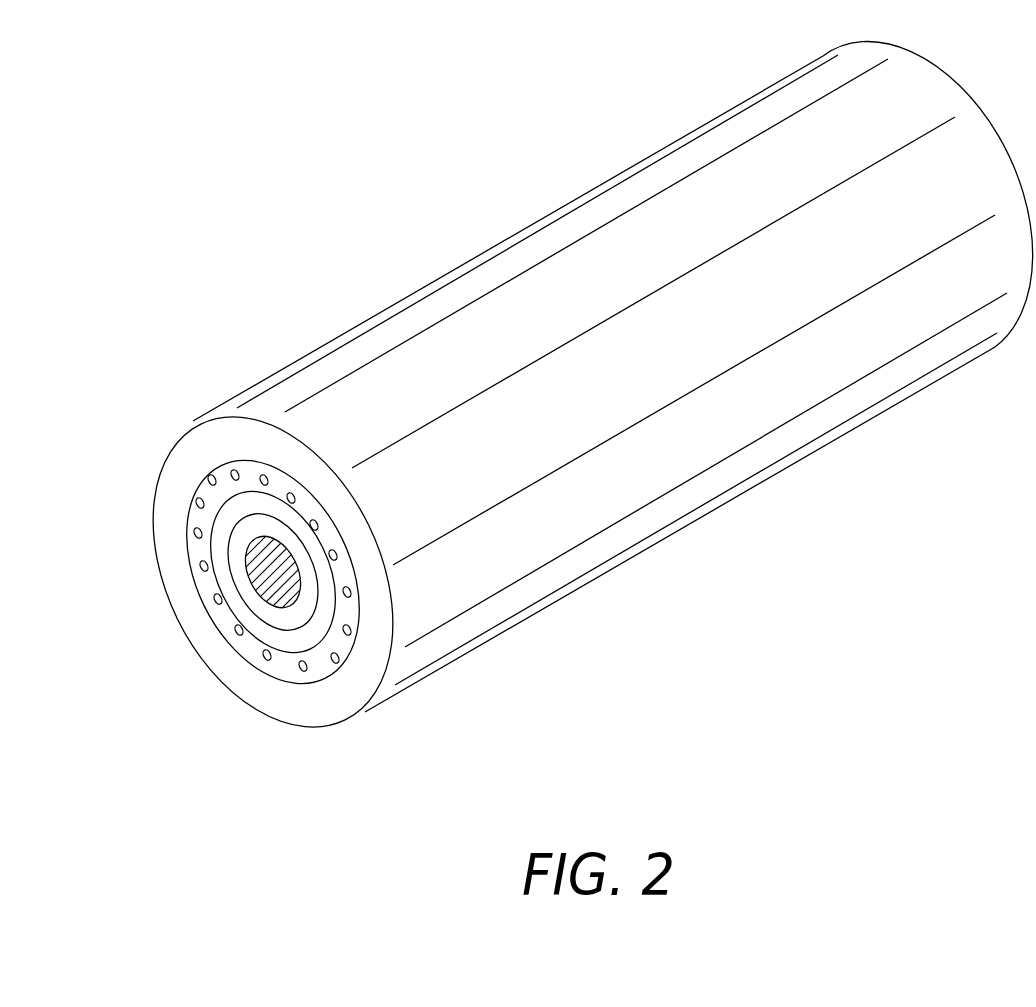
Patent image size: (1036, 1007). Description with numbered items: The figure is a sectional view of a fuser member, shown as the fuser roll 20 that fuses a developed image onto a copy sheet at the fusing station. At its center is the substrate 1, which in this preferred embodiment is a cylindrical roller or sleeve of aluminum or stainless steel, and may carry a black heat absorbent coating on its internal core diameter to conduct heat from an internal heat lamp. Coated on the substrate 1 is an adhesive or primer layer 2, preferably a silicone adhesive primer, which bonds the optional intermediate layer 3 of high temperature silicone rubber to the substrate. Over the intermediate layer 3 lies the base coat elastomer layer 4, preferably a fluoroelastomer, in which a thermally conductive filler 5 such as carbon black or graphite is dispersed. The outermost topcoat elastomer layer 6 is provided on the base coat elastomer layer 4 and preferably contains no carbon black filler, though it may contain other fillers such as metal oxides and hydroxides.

The fuser roll 20 is at (221, 261).
The substrate 1 is at (267, 582).
The adhesive or primer layer 2 is at (255, 528).
The intermediate layer 3 is at (220, 528).
The base coat elastomer layer 4 is at (197, 555).
The filler 5 is at (267, 655).
The topcoat elastomer layer 6 is at (343, 705).